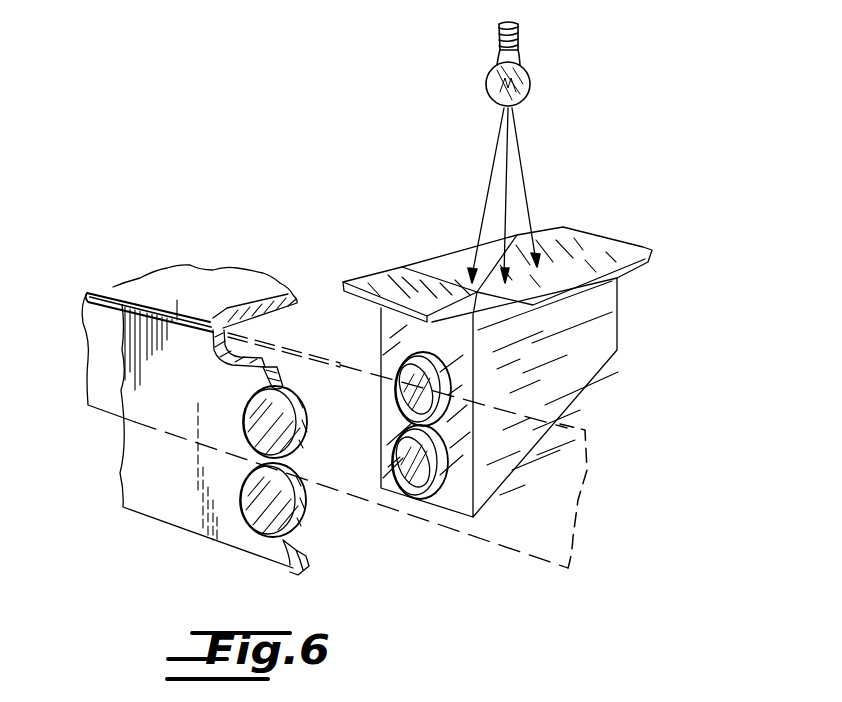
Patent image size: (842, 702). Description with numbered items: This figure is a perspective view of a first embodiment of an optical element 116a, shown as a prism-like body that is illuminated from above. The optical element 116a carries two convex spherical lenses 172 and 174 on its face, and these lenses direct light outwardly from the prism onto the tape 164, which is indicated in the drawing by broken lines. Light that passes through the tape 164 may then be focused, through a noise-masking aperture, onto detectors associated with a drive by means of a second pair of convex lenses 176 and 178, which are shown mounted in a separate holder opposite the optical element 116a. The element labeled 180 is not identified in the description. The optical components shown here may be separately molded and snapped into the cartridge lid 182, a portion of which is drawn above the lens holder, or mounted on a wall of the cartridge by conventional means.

The optical element 116a is at (605, 333).
The convex spherical lens 172 is at (402, 369).
The convex spherical lens 174 is at (437, 497).
The convex lens 176 is at (308, 416).
The convex lens 178 is at (308, 512).
The mounting plate 180 is at (157, 510).
The cartridge lid 182 is at (232, 279).
The tape 164 is at (535, 541).